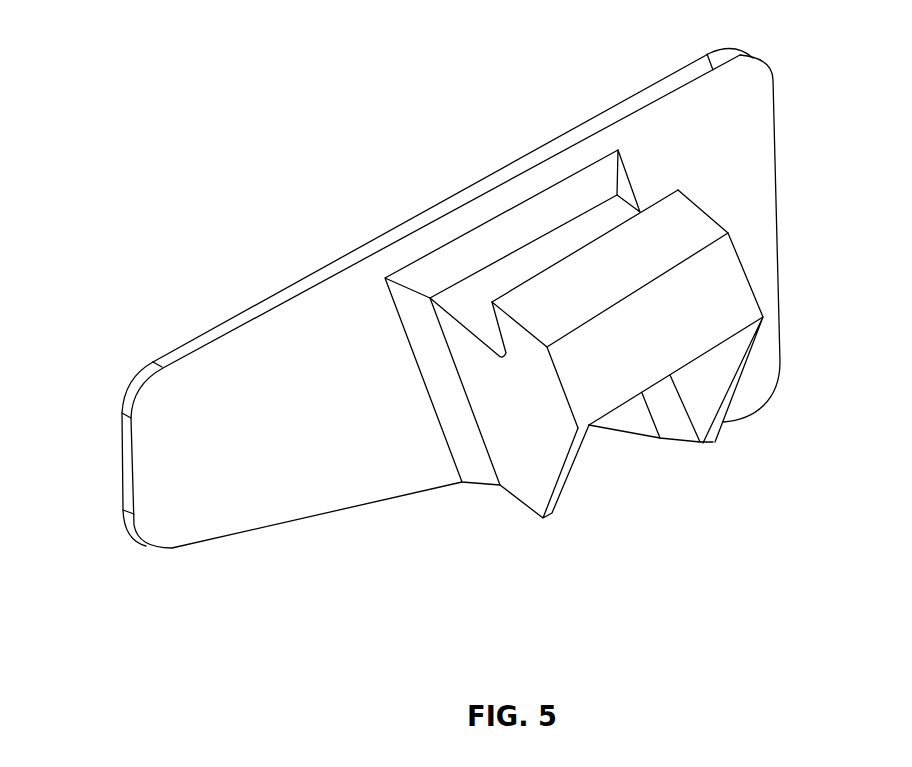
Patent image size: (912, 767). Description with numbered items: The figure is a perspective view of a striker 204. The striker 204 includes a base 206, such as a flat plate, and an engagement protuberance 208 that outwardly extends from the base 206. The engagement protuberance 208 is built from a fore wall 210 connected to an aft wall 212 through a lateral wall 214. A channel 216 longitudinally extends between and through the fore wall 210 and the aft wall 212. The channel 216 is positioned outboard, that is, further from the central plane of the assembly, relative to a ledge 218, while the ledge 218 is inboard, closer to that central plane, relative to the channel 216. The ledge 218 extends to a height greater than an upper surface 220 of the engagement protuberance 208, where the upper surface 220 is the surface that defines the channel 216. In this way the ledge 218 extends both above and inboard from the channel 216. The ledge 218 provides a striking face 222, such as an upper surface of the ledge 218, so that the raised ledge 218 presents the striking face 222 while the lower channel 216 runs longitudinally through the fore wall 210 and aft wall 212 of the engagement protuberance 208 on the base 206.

The striker 204 is at (116, 197).
The base 206 is at (670, 86).
The engagement protuberance 208 is at (747, 283).
The fore wall 210 is at (713, 218).
The aft wall 212 is at (532, 418).
The lateral wall 214 is at (675, 330).
The channel 216 is at (479, 275).
The ledge 218 is at (677, 233).
The upper surface 220 is at (527, 257).
The striking face 222 is at (598, 287).